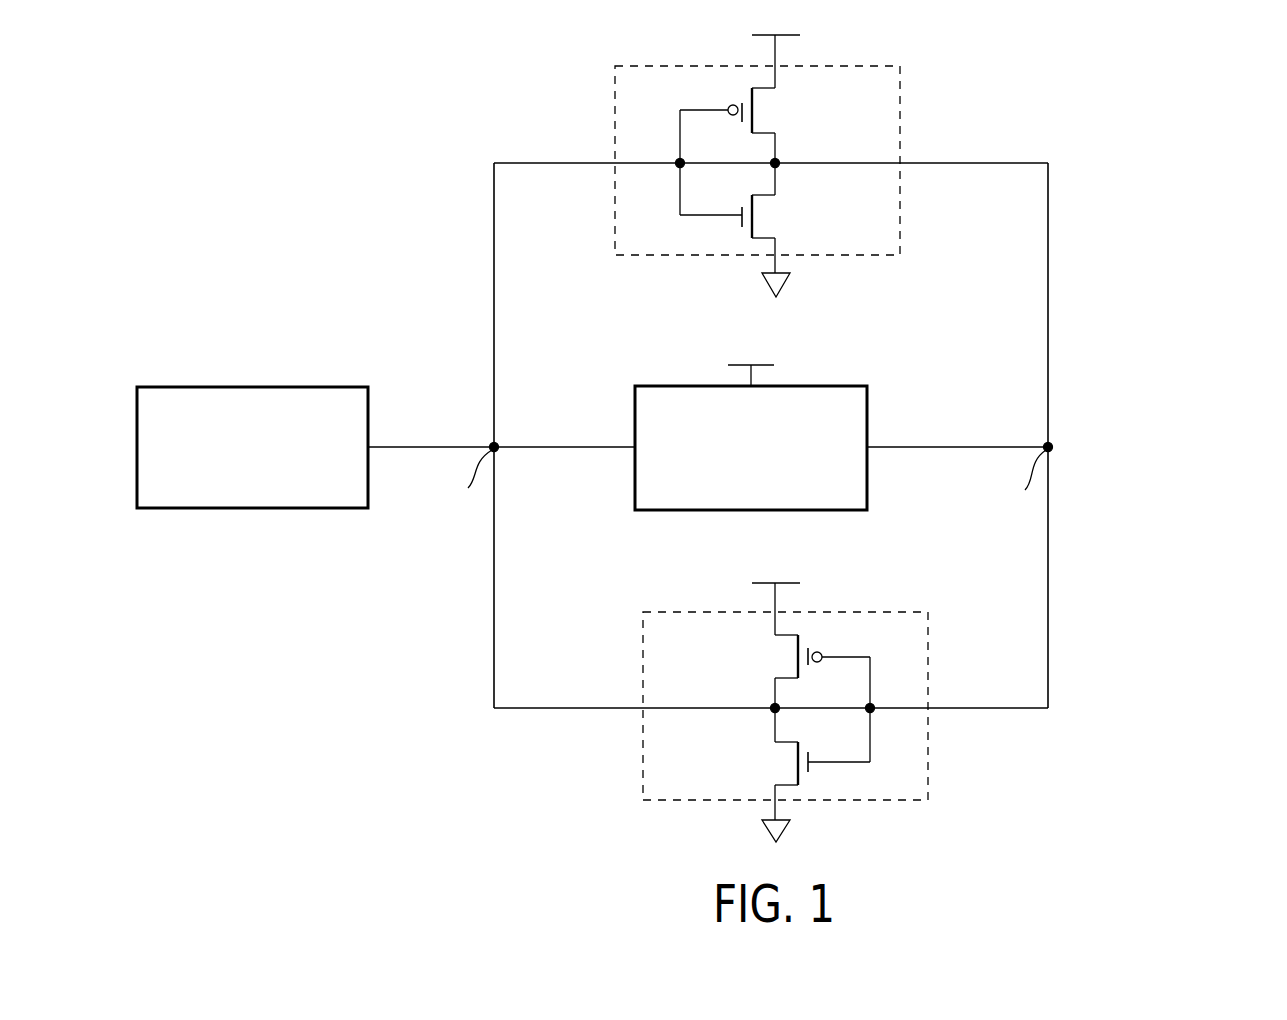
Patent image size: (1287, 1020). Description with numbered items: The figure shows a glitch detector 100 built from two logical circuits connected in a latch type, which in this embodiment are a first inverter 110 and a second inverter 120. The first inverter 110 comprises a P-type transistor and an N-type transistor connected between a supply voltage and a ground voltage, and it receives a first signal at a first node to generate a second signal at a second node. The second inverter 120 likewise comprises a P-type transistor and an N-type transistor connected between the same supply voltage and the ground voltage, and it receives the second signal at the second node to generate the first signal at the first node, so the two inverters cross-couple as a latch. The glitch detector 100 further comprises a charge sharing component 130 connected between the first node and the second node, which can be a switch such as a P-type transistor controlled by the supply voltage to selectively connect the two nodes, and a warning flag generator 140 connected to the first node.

The glitch detector 100 is at (1172, 108).
The inverter 110 is at (900, 88).
The inverter 120 is at (928, 635).
The charge sharing component 130 is at (868, 410).
The warning flag generator 140 is at (370, 410).